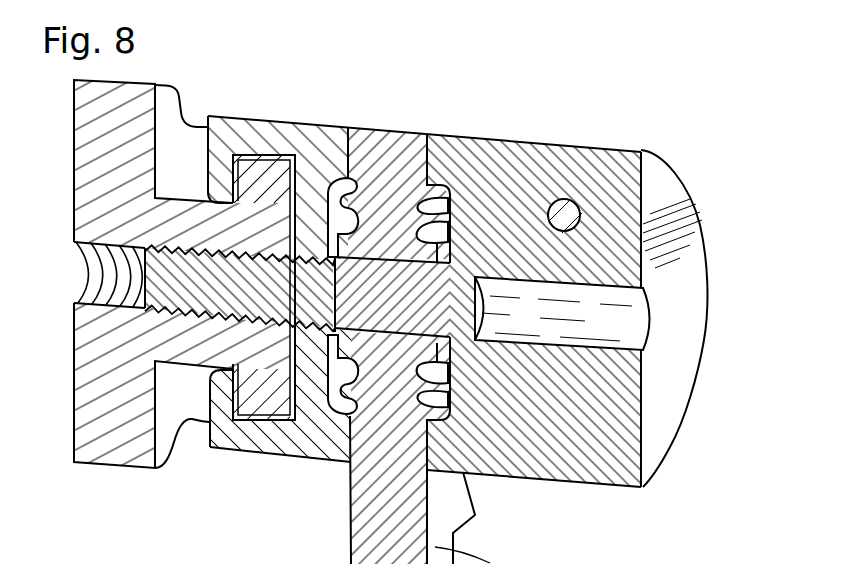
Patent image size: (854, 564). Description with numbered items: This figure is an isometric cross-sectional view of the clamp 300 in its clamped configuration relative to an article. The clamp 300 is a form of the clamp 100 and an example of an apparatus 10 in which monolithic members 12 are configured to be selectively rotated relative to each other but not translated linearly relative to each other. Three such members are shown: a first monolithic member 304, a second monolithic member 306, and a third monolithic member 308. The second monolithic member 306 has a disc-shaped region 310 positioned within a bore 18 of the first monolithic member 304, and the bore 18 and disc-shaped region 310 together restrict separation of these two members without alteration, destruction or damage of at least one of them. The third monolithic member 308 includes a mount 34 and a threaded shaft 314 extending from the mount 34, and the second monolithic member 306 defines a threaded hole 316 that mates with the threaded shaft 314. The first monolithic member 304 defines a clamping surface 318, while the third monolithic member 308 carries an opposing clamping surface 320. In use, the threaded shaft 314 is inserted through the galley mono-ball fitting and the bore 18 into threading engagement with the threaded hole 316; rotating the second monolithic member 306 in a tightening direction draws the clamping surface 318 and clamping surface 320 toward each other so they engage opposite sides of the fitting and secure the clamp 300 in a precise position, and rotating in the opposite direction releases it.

The apparatus 10 is at (386, 297).
The monolithic members 12 is at (624, 130).
The bore 18 is at (266, 164).
The mount 34 is at (556, 484).
The clamp 100 is at (376, 308).
The clamp 300 is at (376, 309).
The first monolithic member 304 is at (231, 112).
The second monolithic member 306 is at (131, 78).
The third monolithic member 308 is at (665, 426).
The disc-shaped region 310 is at (263, 421).
The threaded shaft 314 is at (297, 291).
The threaded hole 316 is at (101, 257).
The clamping surface 318 is at (331, 205).
The clamping surface 320 is at (400, 413).